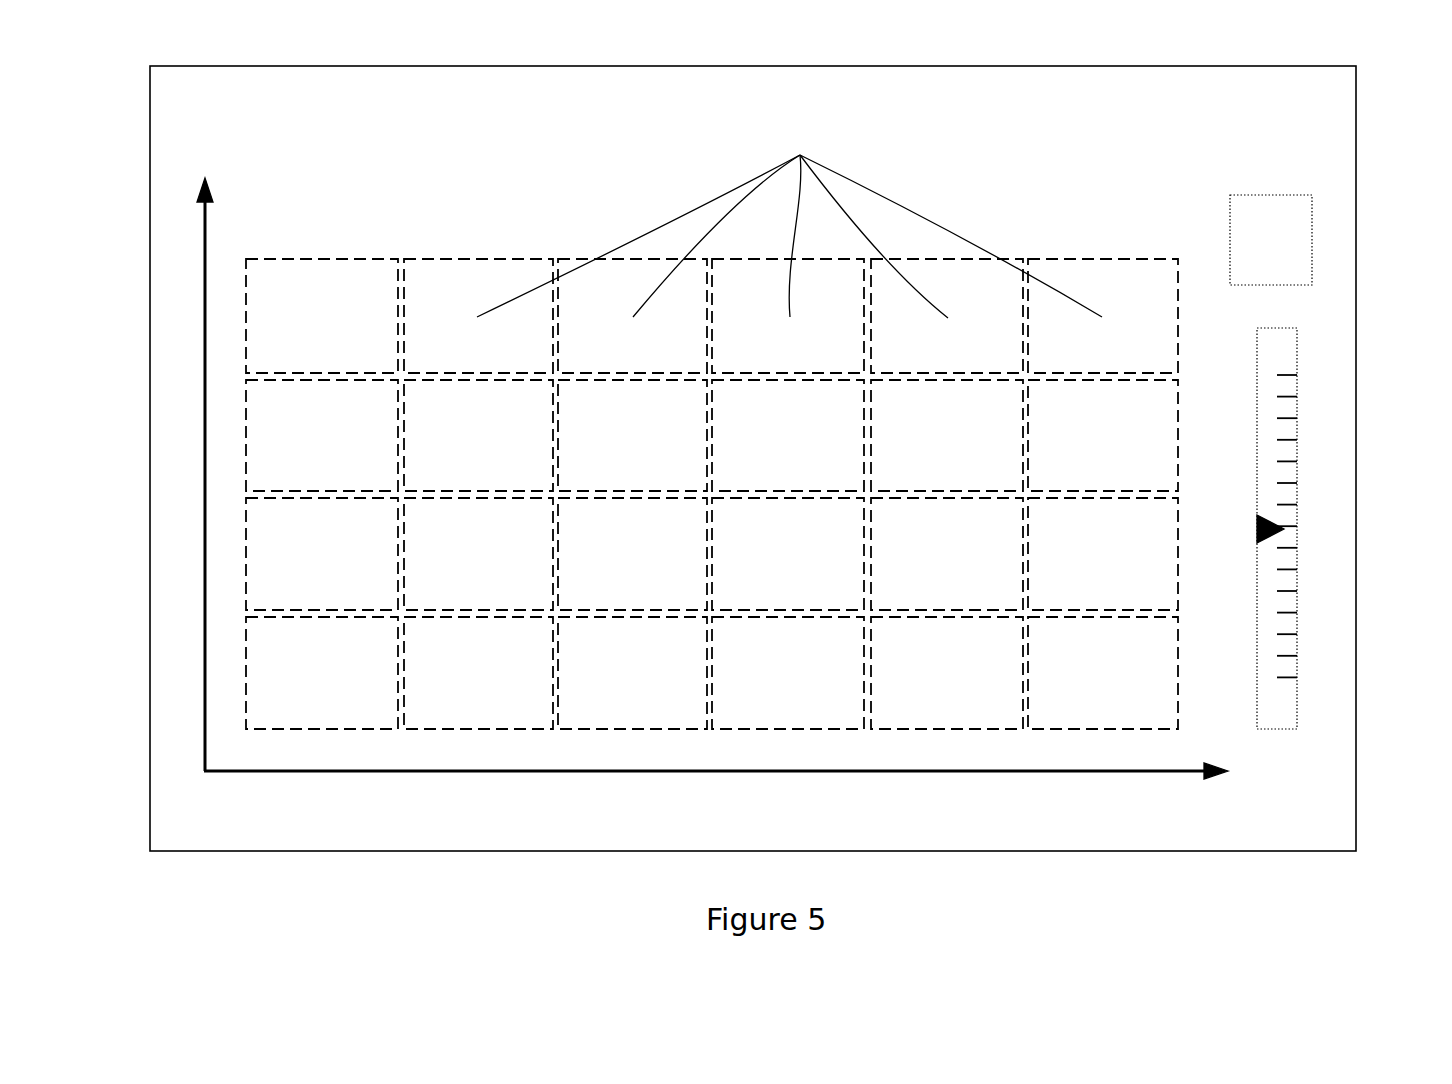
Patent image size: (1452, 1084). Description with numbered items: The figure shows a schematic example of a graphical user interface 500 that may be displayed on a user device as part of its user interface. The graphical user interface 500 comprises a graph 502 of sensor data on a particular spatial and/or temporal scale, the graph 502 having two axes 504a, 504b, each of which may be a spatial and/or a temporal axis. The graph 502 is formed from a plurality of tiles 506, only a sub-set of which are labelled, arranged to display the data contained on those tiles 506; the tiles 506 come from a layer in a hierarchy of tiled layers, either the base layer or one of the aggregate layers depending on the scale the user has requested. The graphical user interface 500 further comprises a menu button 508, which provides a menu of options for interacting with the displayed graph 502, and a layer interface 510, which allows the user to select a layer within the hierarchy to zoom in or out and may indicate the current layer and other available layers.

The graphical user interface 500 is at (1323, 120).
The graph 502 is at (507, 214).
The axis 504a is at (203, 455).
The axis 504b is at (808, 772).
The tiles 506 is at (789, 224).
The menu button 508 is at (1285, 243).
The layer interface 510 is at (1292, 352).